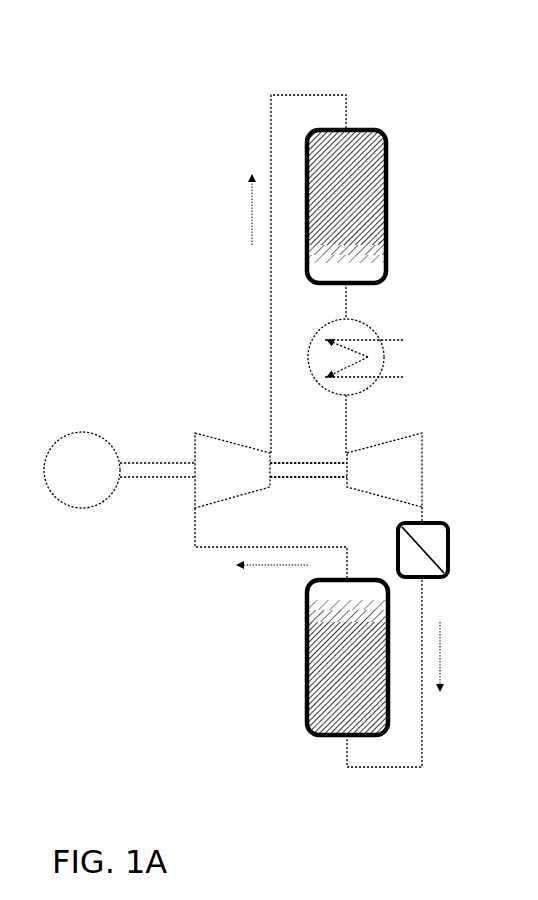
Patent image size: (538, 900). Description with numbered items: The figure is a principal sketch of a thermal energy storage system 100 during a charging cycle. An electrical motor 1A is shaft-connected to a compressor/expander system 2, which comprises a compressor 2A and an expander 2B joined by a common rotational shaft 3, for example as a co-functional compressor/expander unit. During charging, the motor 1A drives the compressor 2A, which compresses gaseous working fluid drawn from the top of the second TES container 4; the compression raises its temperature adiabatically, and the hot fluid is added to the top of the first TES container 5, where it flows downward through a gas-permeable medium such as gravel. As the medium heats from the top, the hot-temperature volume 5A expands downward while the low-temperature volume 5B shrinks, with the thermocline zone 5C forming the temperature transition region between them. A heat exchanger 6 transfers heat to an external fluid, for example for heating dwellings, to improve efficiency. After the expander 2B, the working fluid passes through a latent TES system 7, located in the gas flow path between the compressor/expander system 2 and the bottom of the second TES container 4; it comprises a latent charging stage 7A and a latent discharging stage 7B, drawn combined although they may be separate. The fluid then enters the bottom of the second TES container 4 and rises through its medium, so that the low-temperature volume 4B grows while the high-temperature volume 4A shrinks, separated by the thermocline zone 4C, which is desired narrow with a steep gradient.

The thermal energy storage system 100 is at (168, 72).
The electrical motor 1A is at (82, 455).
The compressor/expander system 2 is at (252, 434).
The compressor 2A is at (232, 470).
The expander 2B is at (384, 470).
The common rotational shaft 3 is at (308, 462).
The second TES container 4 is at (307, 648).
The high-temperature volume 4A is at (325, 592).
The low-temperature volume 4B is at (313, 713).
The thermocline zone 4C is at (313, 613).
The first TES container 5 is at (387, 227).
The hot-temperature volume 5A is at (387, 150).
The low-temperature volume 5B is at (375, 276).
The thermocline zone 5C is at (383, 257).
The heat exchanger 6 is at (370, 357).
The latent TES system 7 is at (433, 504).
The latent charging stage 7A is at (408, 562).
The latent discharging stage 7B is at (437, 542).